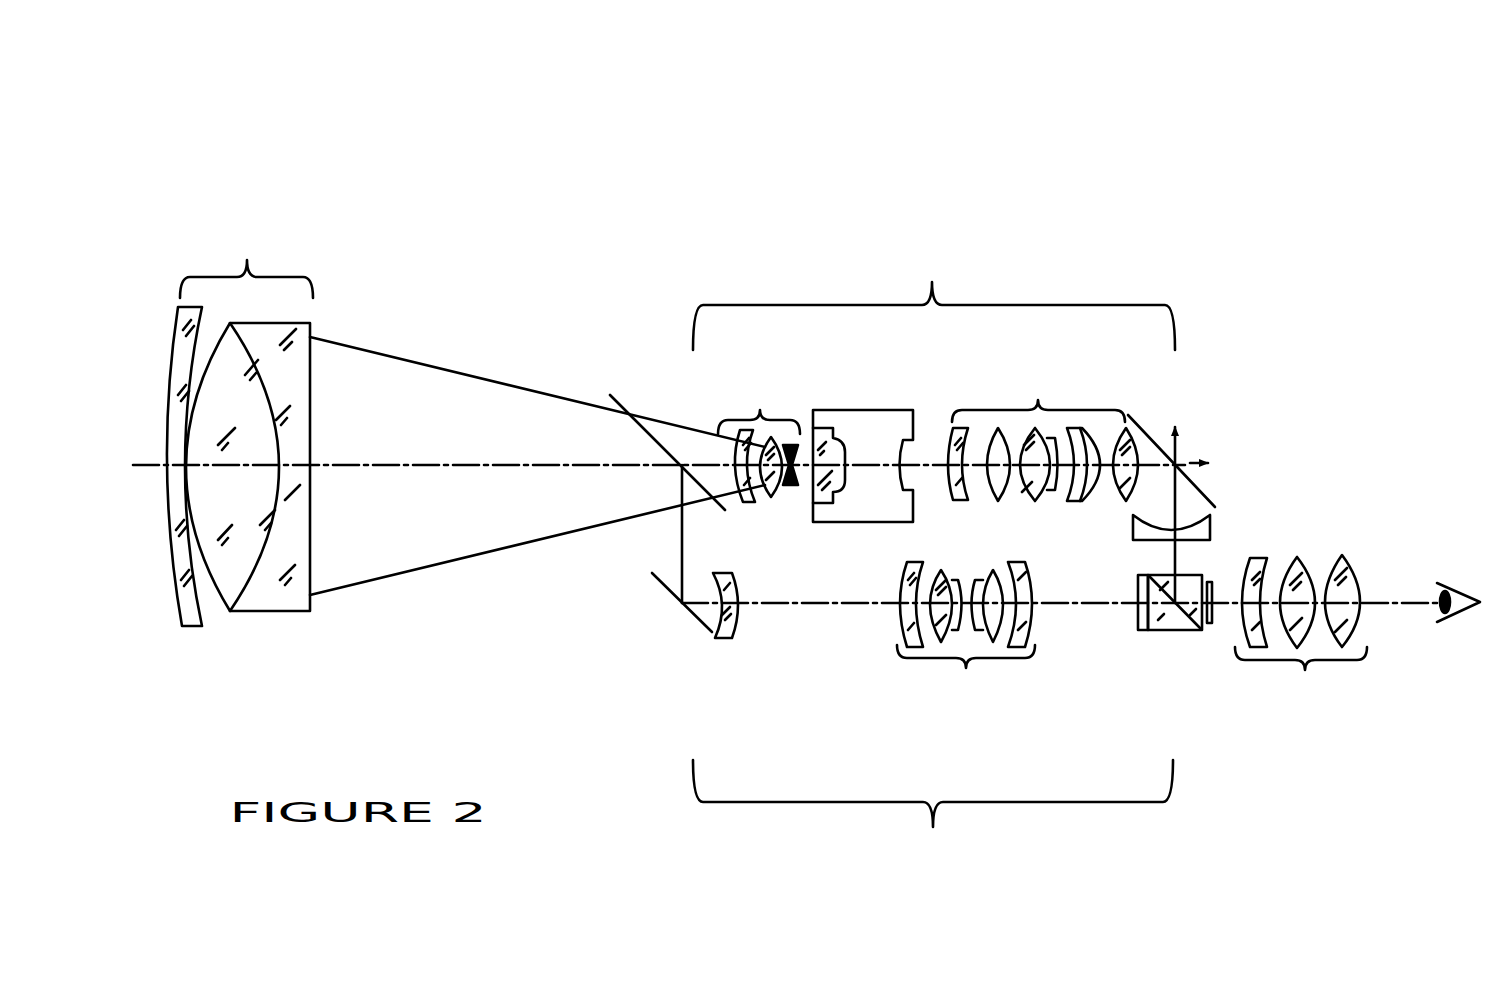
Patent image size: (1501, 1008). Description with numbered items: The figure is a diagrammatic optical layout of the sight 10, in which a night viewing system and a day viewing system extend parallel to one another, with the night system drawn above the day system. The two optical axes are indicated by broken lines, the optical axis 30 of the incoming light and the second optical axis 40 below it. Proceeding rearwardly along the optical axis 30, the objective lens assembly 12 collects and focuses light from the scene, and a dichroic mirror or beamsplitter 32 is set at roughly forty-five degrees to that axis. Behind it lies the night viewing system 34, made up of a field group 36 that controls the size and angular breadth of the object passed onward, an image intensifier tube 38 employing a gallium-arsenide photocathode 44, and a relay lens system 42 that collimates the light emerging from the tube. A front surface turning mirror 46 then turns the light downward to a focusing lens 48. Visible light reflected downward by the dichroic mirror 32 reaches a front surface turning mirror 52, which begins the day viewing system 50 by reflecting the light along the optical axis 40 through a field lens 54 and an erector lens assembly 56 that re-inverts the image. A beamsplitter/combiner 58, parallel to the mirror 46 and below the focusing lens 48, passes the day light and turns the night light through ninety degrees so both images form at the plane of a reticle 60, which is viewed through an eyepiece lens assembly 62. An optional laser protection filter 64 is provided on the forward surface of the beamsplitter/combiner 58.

The sight 10 is at (712, 192).
The objective lens assembly 12 is at (248, 250).
The optical axis 30 is at (145, 468).
The dichroic mirror or beamsplitter 32 is at (620, 400).
The night viewing system 34 is at (934, 298).
The field group 36 is at (759, 441).
The image intensifier tube 38 is at (882, 433).
The gallium-arsenide photocathode 44 is at (818, 428).
The relay lens system 42 is at (1043, 434).
The front surface turning mirror 46 is at (1203, 487).
The focusing lens 48 is at (1210, 520).
The day viewing system 50 is at (933, 812).
The front surface turning mirror 52 is at (657, 593).
The field lens 54 is at (720, 638).
The optical axis 40 is at (852, 605).
The erector lens assembly 56 is at (966, 632).
The beamsplitter/combiner 58 is at (1182, 632).
The reticle 60 is at (1210, 623).
The eyepiece lens assembly 62 is at (1301, 628).
The laser protection filter 64 is at (1138, 612).